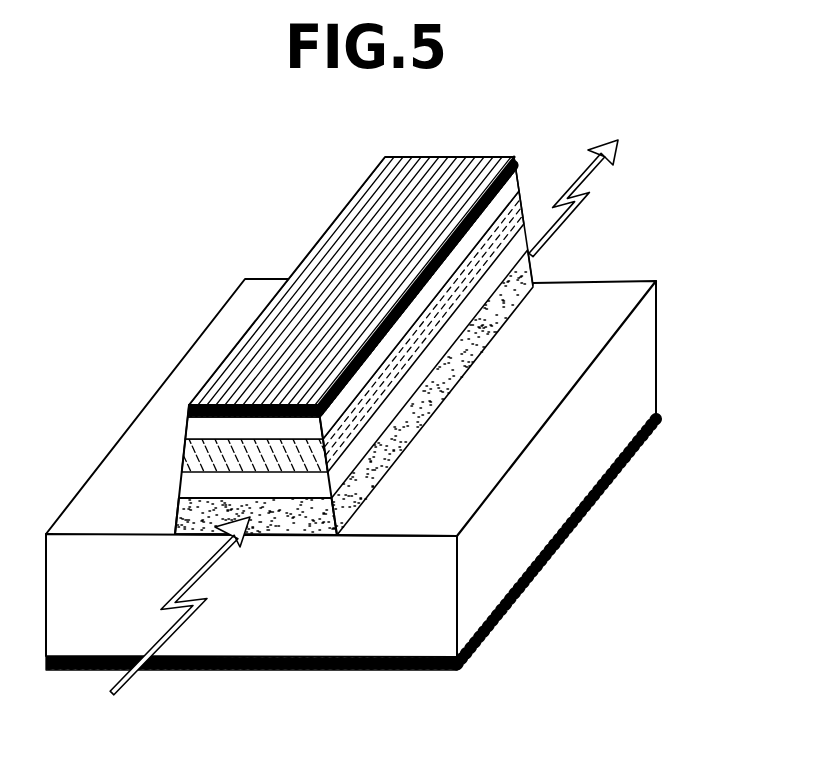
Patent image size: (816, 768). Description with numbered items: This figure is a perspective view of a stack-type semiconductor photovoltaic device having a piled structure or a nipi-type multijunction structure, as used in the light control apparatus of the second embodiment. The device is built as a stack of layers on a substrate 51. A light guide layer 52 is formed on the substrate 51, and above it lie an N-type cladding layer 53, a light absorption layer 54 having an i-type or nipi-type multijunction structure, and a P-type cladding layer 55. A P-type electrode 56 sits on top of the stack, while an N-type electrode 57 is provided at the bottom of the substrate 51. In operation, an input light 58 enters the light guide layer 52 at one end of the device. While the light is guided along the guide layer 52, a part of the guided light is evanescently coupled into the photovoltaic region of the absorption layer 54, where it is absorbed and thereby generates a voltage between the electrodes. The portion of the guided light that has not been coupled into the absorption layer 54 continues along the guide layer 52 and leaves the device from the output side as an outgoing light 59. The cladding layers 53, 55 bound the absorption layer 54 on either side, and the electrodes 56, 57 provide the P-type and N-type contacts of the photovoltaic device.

The substrate 51 is at (498, 581).
The light guide layer 52 is at (380, 465).
The N-type cladding layer 53 is at (410, 387).
The light absorption layer 54 is at (448, 302).
The P-type cladding layer 55 is at (523, 180).
The P-type electrode 56 is at (410, 158).
The N-type electrode 57 is at (362, 672).
The input light 58 is at (135, 683).
The outgoing light 59 is at (593, 175).